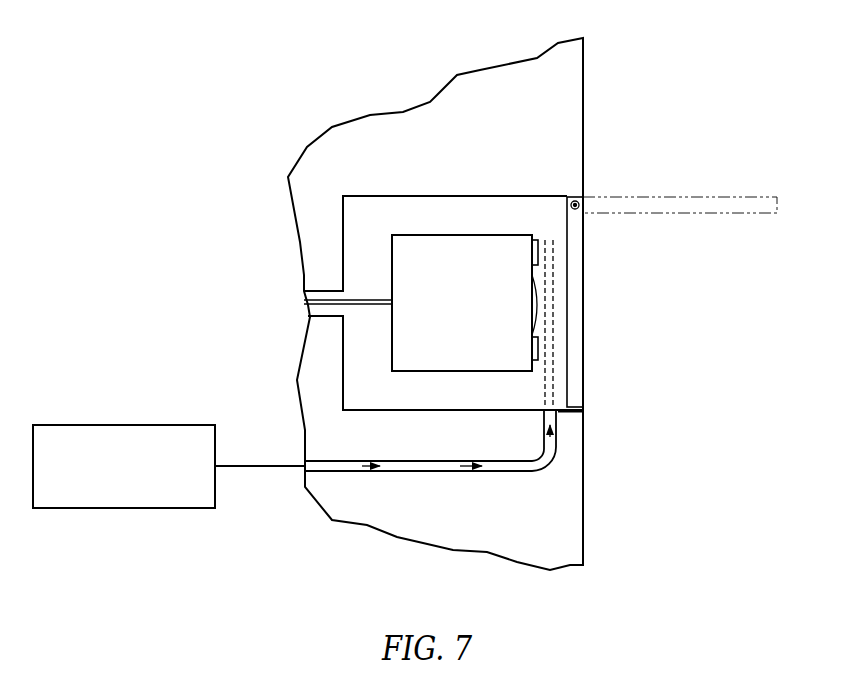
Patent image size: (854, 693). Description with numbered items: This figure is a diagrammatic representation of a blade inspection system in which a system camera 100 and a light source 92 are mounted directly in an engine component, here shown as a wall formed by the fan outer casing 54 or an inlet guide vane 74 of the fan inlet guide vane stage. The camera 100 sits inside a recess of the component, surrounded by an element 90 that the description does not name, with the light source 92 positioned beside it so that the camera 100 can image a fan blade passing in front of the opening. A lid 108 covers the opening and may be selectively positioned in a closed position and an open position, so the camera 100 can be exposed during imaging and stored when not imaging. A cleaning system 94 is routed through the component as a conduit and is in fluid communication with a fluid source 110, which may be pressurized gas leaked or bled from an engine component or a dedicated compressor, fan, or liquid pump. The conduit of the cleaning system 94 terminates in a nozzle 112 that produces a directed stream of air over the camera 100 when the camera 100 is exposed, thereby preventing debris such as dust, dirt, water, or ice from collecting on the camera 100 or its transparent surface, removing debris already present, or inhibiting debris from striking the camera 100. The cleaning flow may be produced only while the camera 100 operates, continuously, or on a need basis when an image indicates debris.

The fan outer casing 54 is at (508, 304).
The inlet guide vane 74 is at (601, 112).
The cleaning assembly housing 90 is at (613, 306).
The light source 92 is at (538, 255).
The cleaning system 94 is at (487, 488).
The system camera 100 is at (384, 351).
The lid 108 is at (720, 197).
The fluid source 110 is at (142, 493).
The nozzle 112 is at (563, 414).